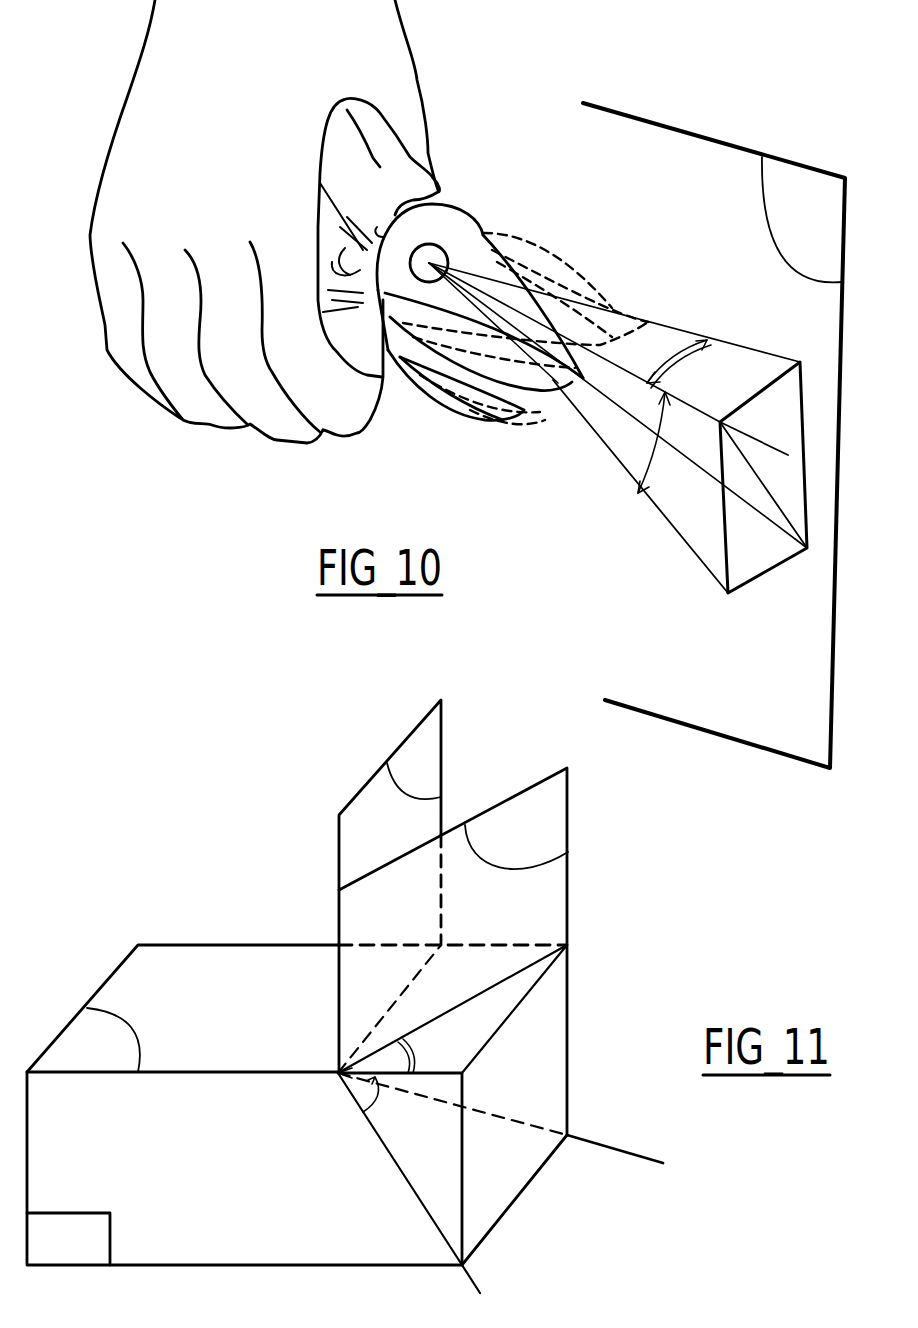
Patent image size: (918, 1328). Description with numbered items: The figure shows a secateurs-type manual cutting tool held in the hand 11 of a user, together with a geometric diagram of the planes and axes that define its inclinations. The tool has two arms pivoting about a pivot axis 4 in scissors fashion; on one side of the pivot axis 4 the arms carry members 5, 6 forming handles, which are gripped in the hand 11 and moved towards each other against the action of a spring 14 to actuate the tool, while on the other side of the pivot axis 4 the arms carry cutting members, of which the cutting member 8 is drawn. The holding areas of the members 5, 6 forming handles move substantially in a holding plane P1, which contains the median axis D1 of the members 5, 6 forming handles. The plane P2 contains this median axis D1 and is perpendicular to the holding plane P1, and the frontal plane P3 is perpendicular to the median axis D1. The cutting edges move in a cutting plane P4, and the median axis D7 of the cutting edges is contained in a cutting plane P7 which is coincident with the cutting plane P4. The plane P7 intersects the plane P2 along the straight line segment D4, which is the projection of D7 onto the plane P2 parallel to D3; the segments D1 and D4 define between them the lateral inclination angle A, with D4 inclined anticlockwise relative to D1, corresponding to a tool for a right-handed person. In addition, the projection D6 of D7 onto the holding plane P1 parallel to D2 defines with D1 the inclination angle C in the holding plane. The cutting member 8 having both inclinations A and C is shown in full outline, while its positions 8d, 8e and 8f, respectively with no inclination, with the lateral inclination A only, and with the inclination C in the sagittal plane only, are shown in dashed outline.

In FIG. 10, the pivot axis 4 is at (457, 215).
In FIG. 10, the member forming a handle 5 is at (385, 140).
In FIG. 10, the member forming a handle 6 is at (360, 363).
In FIG. 10, the cutting member 8 is at (563, 397).
In FIG. 10, the position of the cutting member with no inclination 8d is at (648, 320).
In FIG. 10, the position of the cutting member with lateral inclination only 8e is at (548, 250).
In FIG. 10, the position of the cutting member with sagittal inclination only 8f is at (520, 420).
In FIG. 10, the hand 11 is at (105, 323).
In FIG. 10, the spring 14 is at (320, 223).
In FIG. 10, the median axis of the members forming handles D1 is at (773, 452).
In FIG. 11, the median axis of the members forming handles D1 is at (292, 1166).
In FIG. 11, the straight line segment D2 is at (389, 1009).
In FIG. 11, the straight line segment D3 is at (433, 951).
In FIG. 10, the straight line segment D4 is at (780, 370).
In FIG. 11, the straight line segment D4 is at (452, 1009).
In FIG. 10, the projection of the median axis of the cutting edges D6 is at (612, 470).
In FIG. 11, the projection of the median axis of the cutting edges D6 is at (452, 1187).
In FIG. 10, the median axis of the cutting edges D7 is at (772, 540).
In FIG. 11, the median axis of the cutting edges D7 is at (514, 1119).
In FIG. 11, the holding plane P1 is at (297, 1105).
In FIG. 11, the plane containing the median axis and perpendicular to the holding plane P2 is at (105, 1040).
In FIG. 11, the frontal plane P3 is at (390, 886).
In FIG. 10, the cutting plane P4 is at (714, 435).
In FIG. 11, the cutting plane P4 is at (516, 841).
In FIG. 10, the cutting plane P7 is at (802, 219).
In FIG. 10, the lateral inclination angle A is at (679, 364).
In FIG. 11, the lateral inclination angle A is at (419, 1055).
In FIG. 10, the inclination angle in the holding plane C is at (660, 442).
In FIG. 11, the inclination angle in the holding plane C is at (381, 1102).